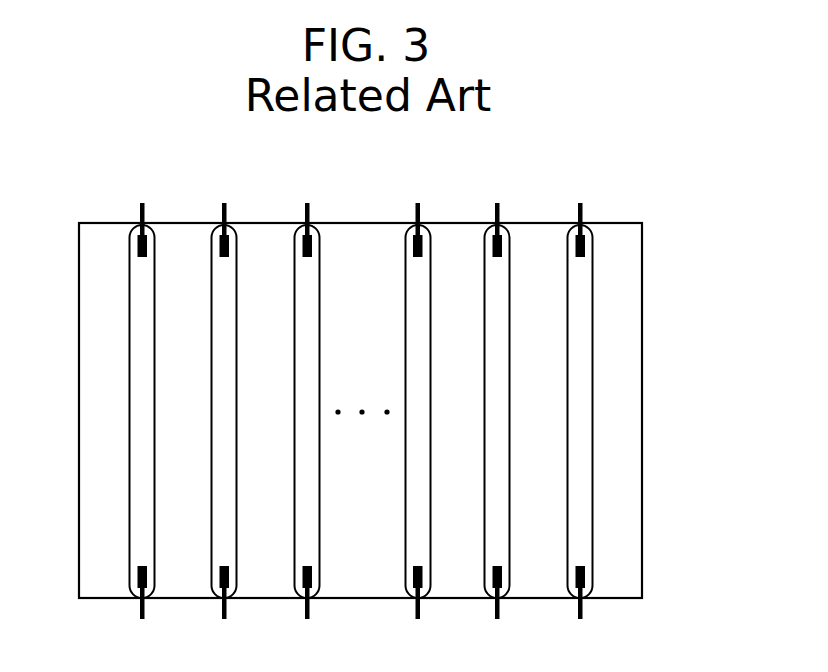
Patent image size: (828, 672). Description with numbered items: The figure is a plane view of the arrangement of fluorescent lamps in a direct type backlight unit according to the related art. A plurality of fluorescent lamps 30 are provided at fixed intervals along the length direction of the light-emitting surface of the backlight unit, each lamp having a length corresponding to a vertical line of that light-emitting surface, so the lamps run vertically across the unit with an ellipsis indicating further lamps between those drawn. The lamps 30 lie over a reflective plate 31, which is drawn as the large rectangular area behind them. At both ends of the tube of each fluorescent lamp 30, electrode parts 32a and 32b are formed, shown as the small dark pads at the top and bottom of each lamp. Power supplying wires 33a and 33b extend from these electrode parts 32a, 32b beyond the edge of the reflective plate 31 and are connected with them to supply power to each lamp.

The fluorescent lamp 30 is at (578, 357).
The reflective plate 31 is at (627, 413).
The electrode part 32a is at (147, 241).
The electrode part 32b is at (146, 580).
The power supplying wire 33a is at (139, 237).
The power supplying wire 33b is at (140, 604).